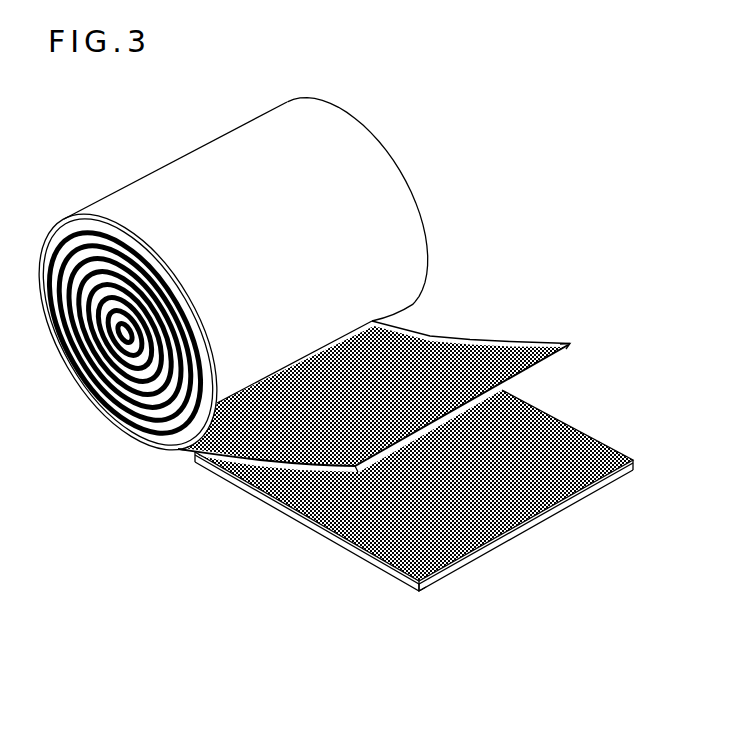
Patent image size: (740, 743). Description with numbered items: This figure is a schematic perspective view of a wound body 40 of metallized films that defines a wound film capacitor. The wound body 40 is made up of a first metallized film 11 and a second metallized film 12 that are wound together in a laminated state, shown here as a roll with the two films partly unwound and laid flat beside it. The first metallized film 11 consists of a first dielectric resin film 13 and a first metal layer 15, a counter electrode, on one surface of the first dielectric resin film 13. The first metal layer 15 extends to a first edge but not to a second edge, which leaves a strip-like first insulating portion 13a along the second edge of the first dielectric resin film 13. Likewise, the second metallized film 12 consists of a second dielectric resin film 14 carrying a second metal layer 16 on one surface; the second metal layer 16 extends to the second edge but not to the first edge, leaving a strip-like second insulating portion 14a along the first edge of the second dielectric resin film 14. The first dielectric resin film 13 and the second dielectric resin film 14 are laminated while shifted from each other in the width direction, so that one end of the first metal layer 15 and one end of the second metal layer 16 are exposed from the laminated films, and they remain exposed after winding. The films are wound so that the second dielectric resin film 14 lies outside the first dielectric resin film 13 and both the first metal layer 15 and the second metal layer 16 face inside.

The wound body of metallized films 40 is at (480, 149).
The first metallized film 11 is at (568, 241).
The first dielectric resin film 13 is at (416, 360).
The first metal layer 15 is at (505, 350).
The first insulating portion 13a is at (572, 347).
The second metallized film 12 is at (295, 588).
The second dielectric resin film 14 is at (414, 508).
The second metal layer 16 is at (372, 507).
The second insulating portion 14a is at (427, 594).